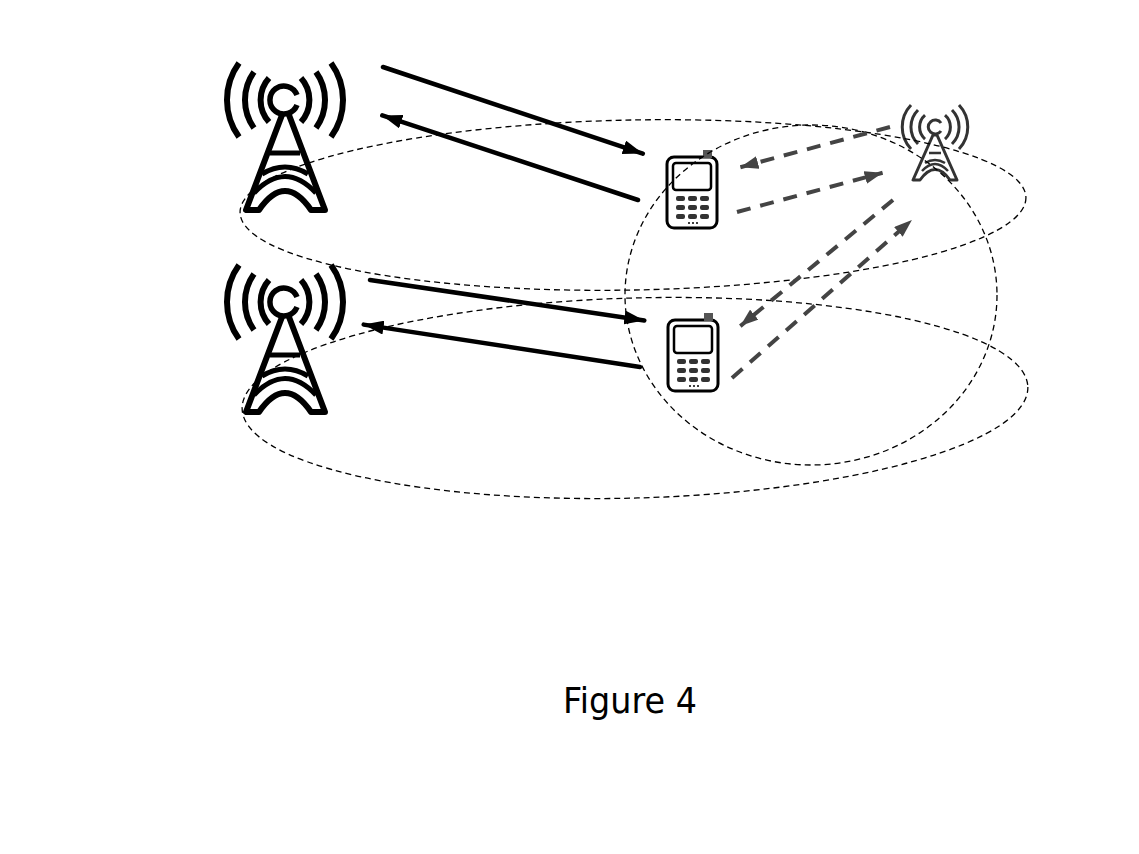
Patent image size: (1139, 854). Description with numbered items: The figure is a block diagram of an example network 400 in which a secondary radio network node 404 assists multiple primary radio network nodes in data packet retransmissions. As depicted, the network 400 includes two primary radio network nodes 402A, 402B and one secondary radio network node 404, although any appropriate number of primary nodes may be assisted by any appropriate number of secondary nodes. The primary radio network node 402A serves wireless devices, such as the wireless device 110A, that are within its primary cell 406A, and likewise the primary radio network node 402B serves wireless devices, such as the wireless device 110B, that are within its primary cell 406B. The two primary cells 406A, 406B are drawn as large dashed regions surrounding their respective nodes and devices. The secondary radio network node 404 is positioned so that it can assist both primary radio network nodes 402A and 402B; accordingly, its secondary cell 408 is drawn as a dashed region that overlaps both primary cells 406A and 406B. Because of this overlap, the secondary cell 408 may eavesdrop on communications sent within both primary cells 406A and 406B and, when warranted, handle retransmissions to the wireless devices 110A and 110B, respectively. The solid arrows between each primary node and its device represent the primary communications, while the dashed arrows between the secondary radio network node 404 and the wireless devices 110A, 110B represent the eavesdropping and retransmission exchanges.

The network 400 is at (955, 543).
The primary radio network node 402A is at (231, 136).
The primary radio network node 402B is at (231, 338).
The wireless device 110A is at (685, 164).
The wireless device 110B is at (663, 379).
The secondary radio network node 404 is at (986, 136).
The primary cell 406A is at (670, 204).
The primary cell 406B is at (673, 398).
The secondary cell 408 is at (811, 295).